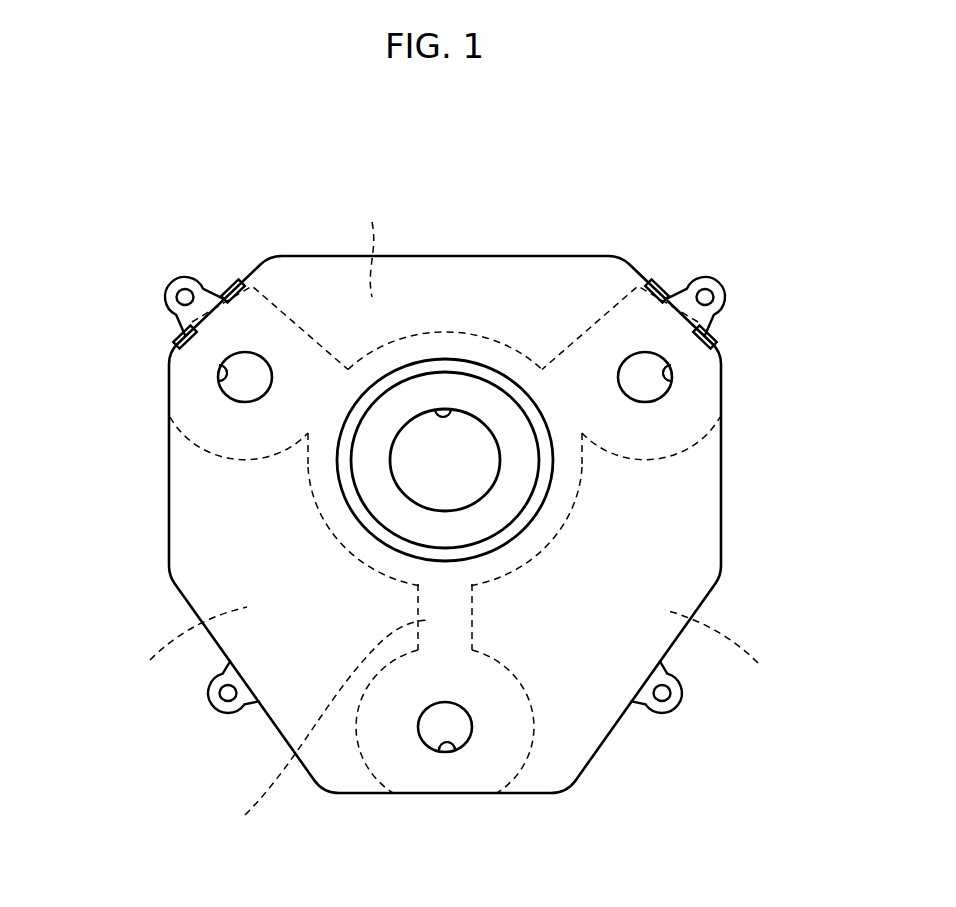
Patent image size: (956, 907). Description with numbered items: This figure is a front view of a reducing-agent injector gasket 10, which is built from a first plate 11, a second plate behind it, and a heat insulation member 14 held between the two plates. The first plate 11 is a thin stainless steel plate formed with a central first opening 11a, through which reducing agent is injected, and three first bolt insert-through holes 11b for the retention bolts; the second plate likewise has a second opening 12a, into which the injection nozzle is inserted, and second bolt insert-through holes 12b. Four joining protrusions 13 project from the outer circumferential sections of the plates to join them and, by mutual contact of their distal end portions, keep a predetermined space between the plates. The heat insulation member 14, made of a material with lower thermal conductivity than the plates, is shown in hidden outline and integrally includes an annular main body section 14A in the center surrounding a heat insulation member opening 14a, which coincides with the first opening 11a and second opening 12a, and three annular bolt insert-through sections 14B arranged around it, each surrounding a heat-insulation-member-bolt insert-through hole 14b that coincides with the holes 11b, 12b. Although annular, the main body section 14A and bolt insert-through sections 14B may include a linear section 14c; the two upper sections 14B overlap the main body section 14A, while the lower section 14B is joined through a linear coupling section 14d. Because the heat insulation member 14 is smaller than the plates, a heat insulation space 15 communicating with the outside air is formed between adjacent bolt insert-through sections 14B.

The gasket 10 is at (330, 240).
The first plate 11 is at (527, 278).
The first opening 11a is at (452, 410).
The second opening 12a is at (446, 303).
The first bolt insert-through holes 11b is at (218, 380).
The second bolt insert-through holes 12b is at (439, 636).
The joining protrusions 13 is at (172, 284).
The heat insulation member 14 is at (557, 533).
The main body section 14A is at (565, 492).
The bolt insert-through sections 14B is at (205, 440).
The heat insulation member opening 14a is at (418, 463).
The heat-insulation-member-bolt insert-through hole 14b is at (247, 367).
The linear section 14c is at (284, 308).
The linear coupling section 14d is at (308, 728).
The heat insulation space 15 is at (453, 434).